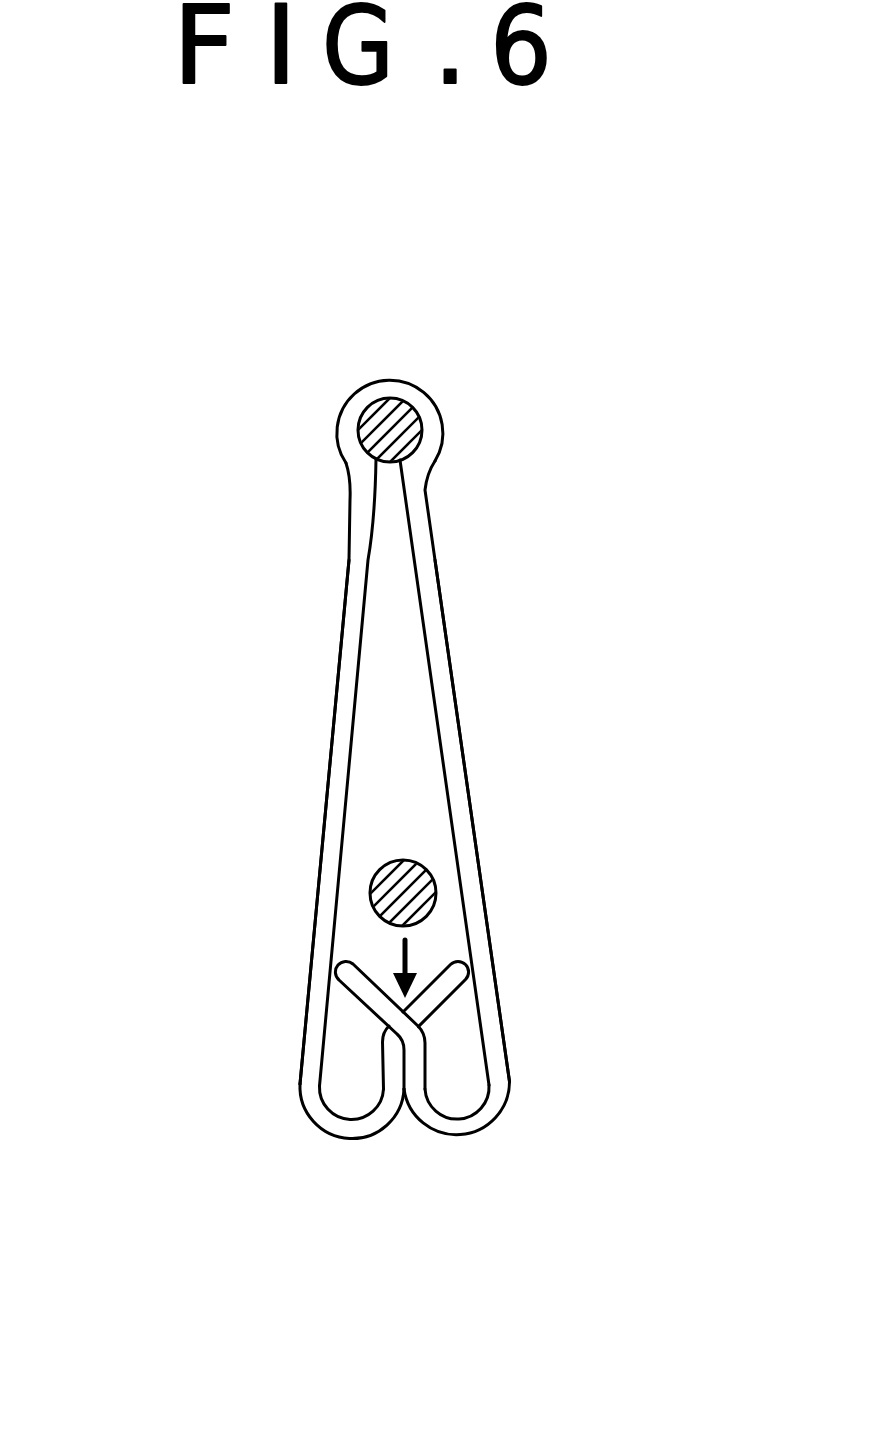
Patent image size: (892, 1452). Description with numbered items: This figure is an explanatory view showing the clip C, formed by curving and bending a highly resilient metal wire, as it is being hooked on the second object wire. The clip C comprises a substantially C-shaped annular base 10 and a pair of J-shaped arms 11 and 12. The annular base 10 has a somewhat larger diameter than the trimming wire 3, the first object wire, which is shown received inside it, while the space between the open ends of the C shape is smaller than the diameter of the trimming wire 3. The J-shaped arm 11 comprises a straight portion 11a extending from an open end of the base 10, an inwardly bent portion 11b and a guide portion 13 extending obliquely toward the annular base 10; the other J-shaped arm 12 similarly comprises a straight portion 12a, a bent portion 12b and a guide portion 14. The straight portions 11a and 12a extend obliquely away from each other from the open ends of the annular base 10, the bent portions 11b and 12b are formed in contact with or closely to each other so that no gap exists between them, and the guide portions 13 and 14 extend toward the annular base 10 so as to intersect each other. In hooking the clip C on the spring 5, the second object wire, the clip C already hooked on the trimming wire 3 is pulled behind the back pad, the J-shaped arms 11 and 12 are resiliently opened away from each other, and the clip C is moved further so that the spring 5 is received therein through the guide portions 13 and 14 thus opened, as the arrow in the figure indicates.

The clip C is at (396, 770).
The annular base 10 is at (366, 390).
The trimming wire 3 is at (399, 416).
The J-shaped arm 11 is at (323, 755).
The straight portion 11a is at (335, 828).
The bent portion 11b is at (348, 1143).
The J-shaped arm 12 is at (457, 697).
The straight portion 12a is at (470, 813).
The bent portion 12b is at (466, 1140).
The guide portion 13 is at (443, 962).
The guide portion 14 is at (338, 966).
The spring 5 is at (437, 877).